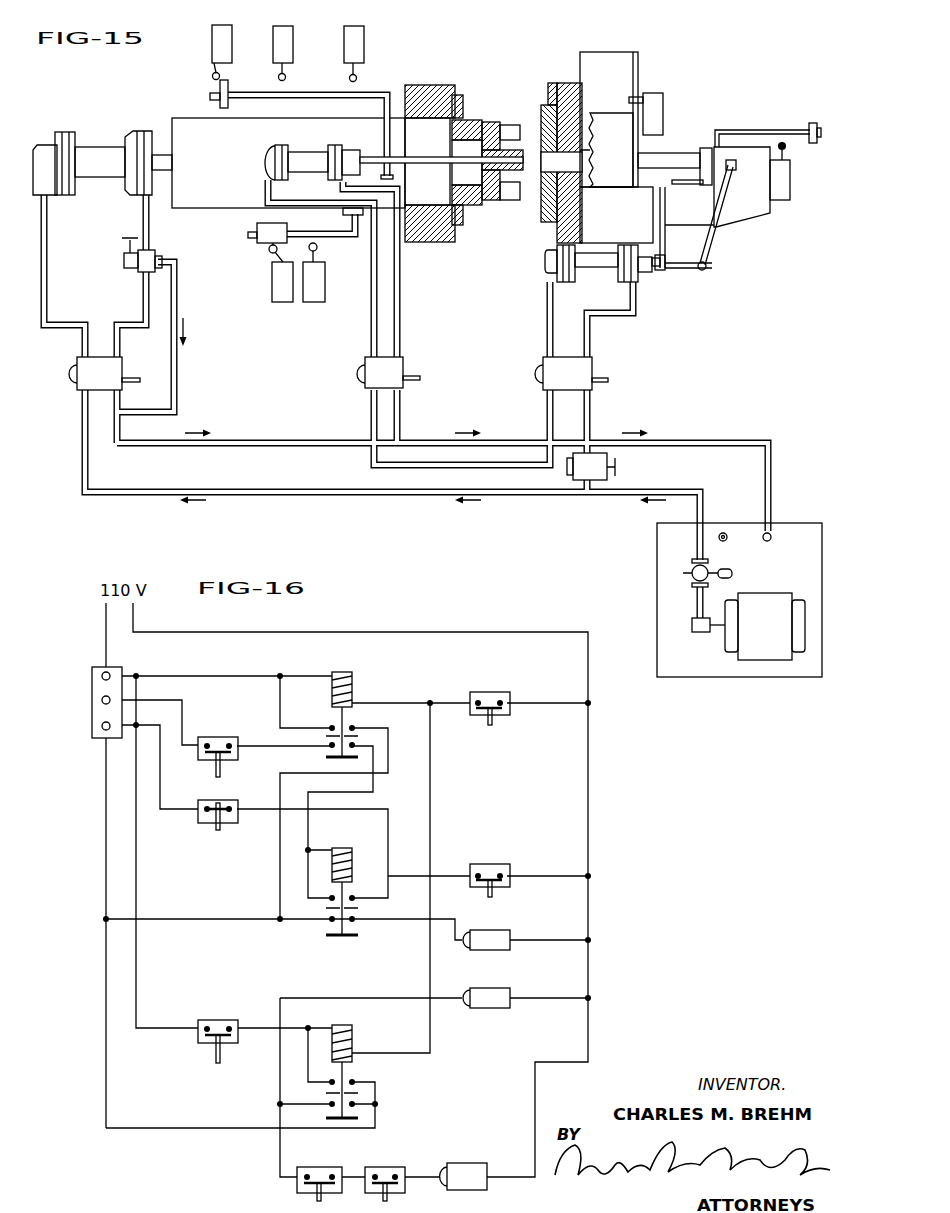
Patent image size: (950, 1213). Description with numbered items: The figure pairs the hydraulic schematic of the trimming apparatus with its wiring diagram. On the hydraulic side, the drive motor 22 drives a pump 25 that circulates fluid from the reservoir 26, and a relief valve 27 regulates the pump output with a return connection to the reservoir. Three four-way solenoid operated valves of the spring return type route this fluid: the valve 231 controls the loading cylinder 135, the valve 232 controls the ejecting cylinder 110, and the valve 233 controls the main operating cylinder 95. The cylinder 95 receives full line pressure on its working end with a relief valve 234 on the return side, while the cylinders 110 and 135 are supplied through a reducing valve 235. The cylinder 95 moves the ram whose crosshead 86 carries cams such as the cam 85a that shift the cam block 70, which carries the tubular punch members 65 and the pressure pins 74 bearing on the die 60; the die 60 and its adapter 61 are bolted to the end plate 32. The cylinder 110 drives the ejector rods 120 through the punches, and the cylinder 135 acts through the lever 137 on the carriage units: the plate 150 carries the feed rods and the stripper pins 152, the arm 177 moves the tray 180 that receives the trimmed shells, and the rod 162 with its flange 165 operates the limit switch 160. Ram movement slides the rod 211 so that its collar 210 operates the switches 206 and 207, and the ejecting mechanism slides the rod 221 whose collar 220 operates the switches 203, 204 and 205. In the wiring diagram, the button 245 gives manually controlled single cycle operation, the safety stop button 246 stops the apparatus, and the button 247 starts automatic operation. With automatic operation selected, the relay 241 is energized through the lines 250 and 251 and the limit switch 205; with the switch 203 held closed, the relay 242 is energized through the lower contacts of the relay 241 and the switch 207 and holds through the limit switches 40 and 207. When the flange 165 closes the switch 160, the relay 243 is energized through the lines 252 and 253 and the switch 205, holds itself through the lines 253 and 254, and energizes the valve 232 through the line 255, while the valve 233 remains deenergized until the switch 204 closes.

In FIG. 15, the drive motor 22 is at (757, 655).
In FIG. 15, the pump 25 is at (692, 624).
In FIG. 15, the reservoir 26 is at (795, 530).
In FIG. 15, the relief valve 27 is at (690, 568).
In FIG. 15, the end plate 32 is at (563, 83).
In FIG. 15, the limit switch 40 is at (653, 100).
In FIG. 16, the limit switch 40 is at (208, 823).
In FIG. 15, the die 60 is at (543, 105).
In FIG. 15, the adapter 61 is at (540, 122).
In FIG. 15, the punch members 65 is at (522, 182).
In FIG. 15, the cam block 70 is at (473, 205).
In FIG. 15, the pressure pins 74 is at (503, 123).
In FIG. 15, the cam 85a is at (463, 96).
In FIG. 15, the crosshead 86 is at (423, 242).
In FIG. 15, the hydraulic cylinder 95 is at (95, 152).
In FIG. 15, the hydraulic cylinder 110 is at (307, 155).
In FIG. 15, the ejector rods 120 is at (422, 162).
In FIG. 15, the hydraulic cylinder 135 is at (603, 269).
In FIG. 15, the lever 137 is at (712, 238).
In FIG. 15, the plate 150 is at (707, 150).
In FIG. 15, the stripper pins 152 is at (685, 184).
In FIG. 15, the limit switch 160 is at (780, 194).
In FIG. 16, the limit switch 160 is at (223, 1020).
In FIG. 15, the rod 162 is at (752, 128).
In FIG. 15, the flange 165 is at (812, 123).
In FIG. 15, the arm 177 is at (662, 270).
In FIG. 15, the tray 180 is at (625, 191).
In FIG. 15, the limit switch 203 is at (213, 50).
In FIG. 16, the limit switch 203 is at (222, 737).
In FIG. 15, the limit switch 204 is at (284, 27).
In FIG. 16, the limit switch 204 is at (295, 1185).
In FIG. 15, the limit switch 205 is at (365, 36).
In FIG. 16, the limit switch 205 is at (497, 692).
In FIG. 15, the limit switch 206 is at (285, 297).
In FIG. 16, the limit switch 206 is at (387, 1168).
In FIG. 15, the limit switch 207 is at (313, 297).
In FIG. 16, the limit switch 207 is at (497, 862).
In FIG. 15, the collar 210 is at (265, 243).
In FIG. 15, the rod 211 is at (248, 236).
In FIG. 15, the collar 220 is at (219, 102).
In FIG. 15, the rod 221 is at (372, 92).
In FIG. 15, the valve 231 is at (588, 370).
In FIG. 16, the valve 231 is at (497, 930).
In FIG. 15, the valve 232 is at (401, 368).
In FIG. 16, the valve 232 is at (487, 1009).
In FIG. 15, the valve 233 is at (83, 383).
In FIG. 16, the valve 233 is at (470, 1165).
In FIG. 15, the relief valve 234 is at (135, 272).
In FIG. 15, the reducing valve 235 is at (582, 482).
In FIG. 16, the control relay 241 is at (352, 718).
In FIG. 16, the control relay 242 is at (355, 887).
In FIG. 16, the control relay 243 is at (325, 1073).
In FIG. 16, the button 245 is at (100, 676).
In FIG. 16, the safety stop button 246 is at (100, 701).
In FIG. 16, the button 247 is at (100, 728).
In FIG. 16, the line 250 is at (235, 675).
In FIG. 16, the line 251 is at (415, 703).
In FIG. 16, the line 252 is at (138, 890).
In FIG. 16, the line 253 is at (432, 800).
In FIG. 16, the line 254 is at (106, 1092).
In FIG. 16, the line 255 is at (358, 997).